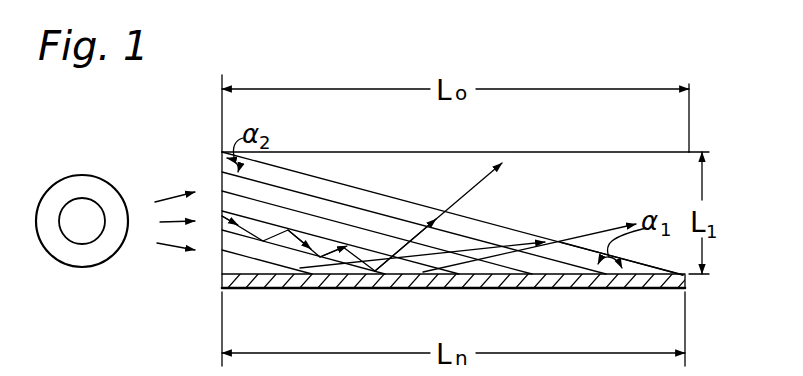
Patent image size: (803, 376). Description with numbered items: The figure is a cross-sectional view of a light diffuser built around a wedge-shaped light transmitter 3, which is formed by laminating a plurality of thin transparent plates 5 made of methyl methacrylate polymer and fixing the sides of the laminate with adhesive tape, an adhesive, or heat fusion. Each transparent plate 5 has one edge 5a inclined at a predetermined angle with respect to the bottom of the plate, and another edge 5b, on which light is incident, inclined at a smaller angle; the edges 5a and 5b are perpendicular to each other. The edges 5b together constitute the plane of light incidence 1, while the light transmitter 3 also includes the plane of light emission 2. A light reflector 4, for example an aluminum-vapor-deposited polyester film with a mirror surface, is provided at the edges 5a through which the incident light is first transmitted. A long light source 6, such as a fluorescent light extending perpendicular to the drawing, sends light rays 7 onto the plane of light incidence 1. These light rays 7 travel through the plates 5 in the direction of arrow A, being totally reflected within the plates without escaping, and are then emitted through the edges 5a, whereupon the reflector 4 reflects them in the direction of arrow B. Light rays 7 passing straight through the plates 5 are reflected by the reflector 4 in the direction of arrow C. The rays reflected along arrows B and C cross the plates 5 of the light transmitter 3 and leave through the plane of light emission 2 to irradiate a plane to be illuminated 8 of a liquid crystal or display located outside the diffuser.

The plane of incidence of light 1 is at (214, 192).
The plane of emission of light 2 is at (308, 140).
The light transmitter 3 is at (630, 252).
The reflector 4 is at (587, 289).
The transparent plate 5 is at (272, 268).
The edge of the plate 5a is at (406, 270).
The edge of the plate 5b is at (222, 226).
The light source 6 is at (82, 268).
The incident light 7 is at (165, 222).
The plane to be illuminated 8 is at (568, 152).
The arrow A is at (344, 258).
The arrow B is at (422, 230).
The arrow C is at (492, 258).